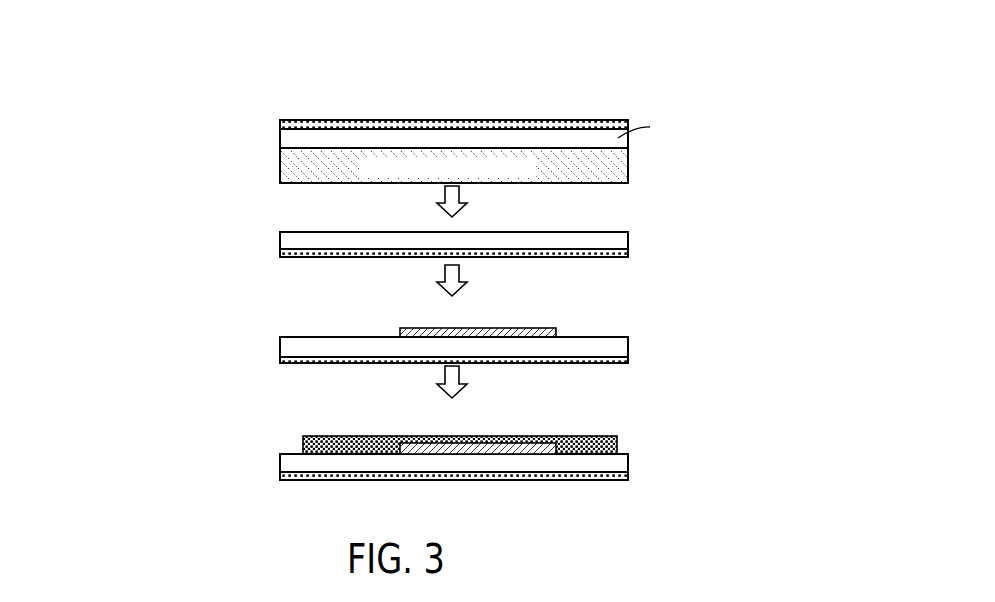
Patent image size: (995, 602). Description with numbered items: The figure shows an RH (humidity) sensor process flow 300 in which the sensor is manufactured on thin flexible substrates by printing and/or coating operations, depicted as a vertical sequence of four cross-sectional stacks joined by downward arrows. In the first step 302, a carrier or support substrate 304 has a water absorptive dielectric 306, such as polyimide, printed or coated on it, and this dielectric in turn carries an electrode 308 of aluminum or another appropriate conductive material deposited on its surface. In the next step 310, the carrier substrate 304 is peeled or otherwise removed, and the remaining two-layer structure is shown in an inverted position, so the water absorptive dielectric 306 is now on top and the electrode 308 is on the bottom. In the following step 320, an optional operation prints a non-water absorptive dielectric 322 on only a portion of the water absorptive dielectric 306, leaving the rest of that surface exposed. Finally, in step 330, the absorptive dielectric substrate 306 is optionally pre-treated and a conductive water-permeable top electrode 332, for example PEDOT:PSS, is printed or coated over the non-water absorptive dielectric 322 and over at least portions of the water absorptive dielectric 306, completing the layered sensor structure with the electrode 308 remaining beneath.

The RH sensor process flow 300 is at (166, 76).
The step 302 is at (185, 162).
The carrier substrate 304 is at (288, 170).
The water absorptive dielectric 306 is at (288, 135).
The electrode 308 is at (280, 124).
The step 310 is at (196, 249).
The step 320 is at (196, 352).
The non-water absorptive dielectric 322 is at (400, 333).
The step 330 is at (196, 460).
The conductive water-permeable top electrode 332 is at (310, 445).